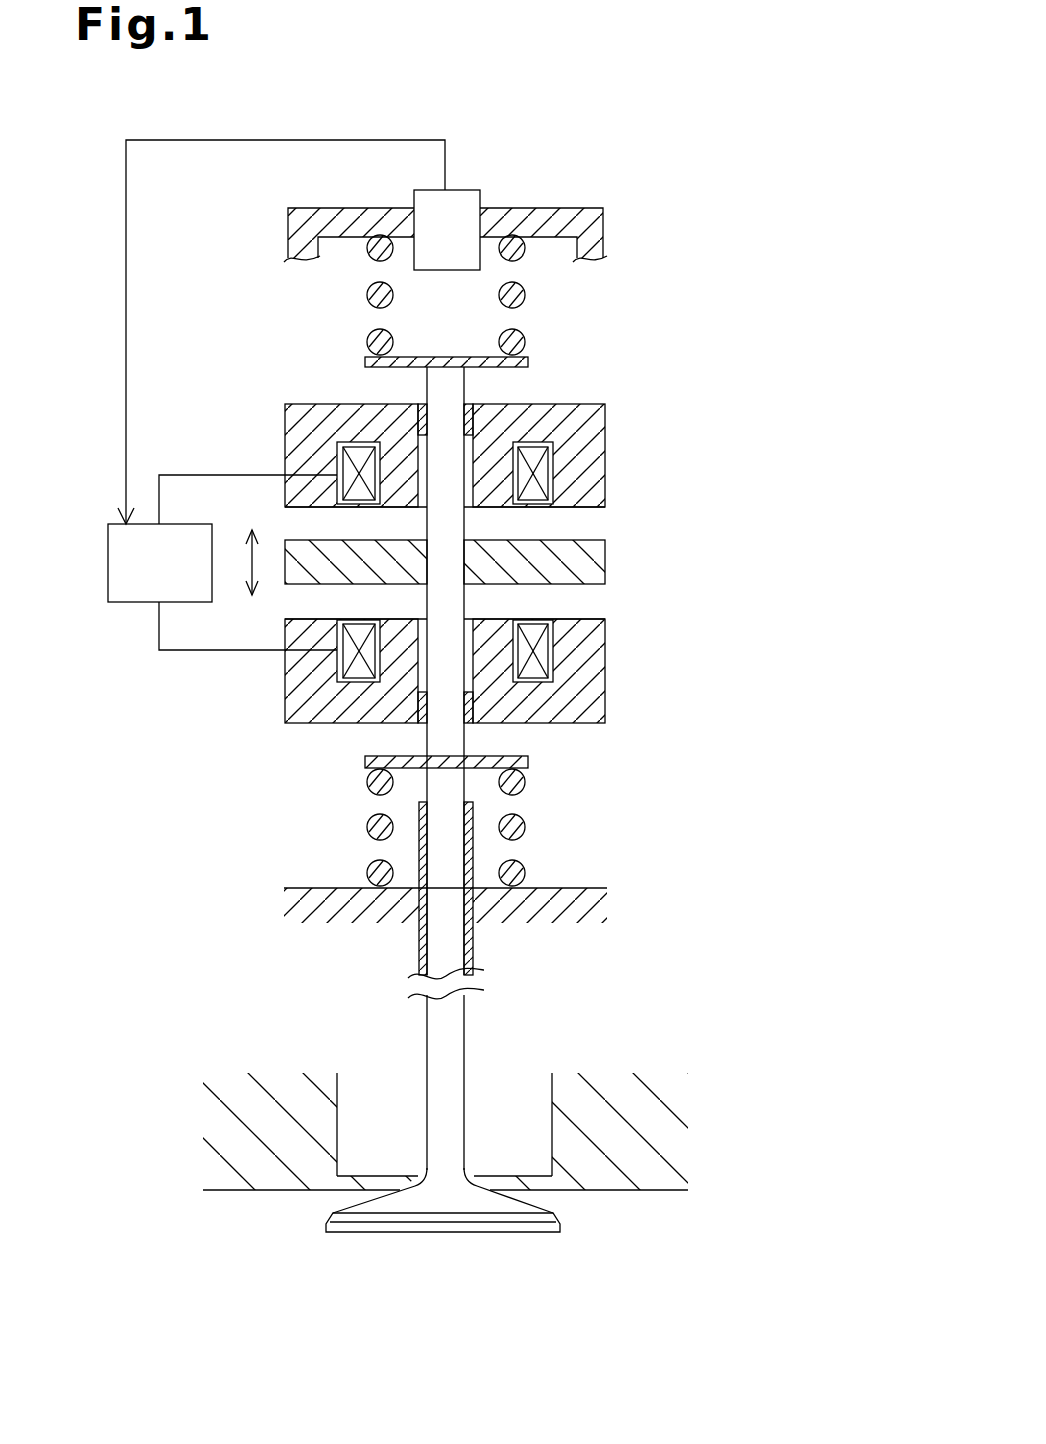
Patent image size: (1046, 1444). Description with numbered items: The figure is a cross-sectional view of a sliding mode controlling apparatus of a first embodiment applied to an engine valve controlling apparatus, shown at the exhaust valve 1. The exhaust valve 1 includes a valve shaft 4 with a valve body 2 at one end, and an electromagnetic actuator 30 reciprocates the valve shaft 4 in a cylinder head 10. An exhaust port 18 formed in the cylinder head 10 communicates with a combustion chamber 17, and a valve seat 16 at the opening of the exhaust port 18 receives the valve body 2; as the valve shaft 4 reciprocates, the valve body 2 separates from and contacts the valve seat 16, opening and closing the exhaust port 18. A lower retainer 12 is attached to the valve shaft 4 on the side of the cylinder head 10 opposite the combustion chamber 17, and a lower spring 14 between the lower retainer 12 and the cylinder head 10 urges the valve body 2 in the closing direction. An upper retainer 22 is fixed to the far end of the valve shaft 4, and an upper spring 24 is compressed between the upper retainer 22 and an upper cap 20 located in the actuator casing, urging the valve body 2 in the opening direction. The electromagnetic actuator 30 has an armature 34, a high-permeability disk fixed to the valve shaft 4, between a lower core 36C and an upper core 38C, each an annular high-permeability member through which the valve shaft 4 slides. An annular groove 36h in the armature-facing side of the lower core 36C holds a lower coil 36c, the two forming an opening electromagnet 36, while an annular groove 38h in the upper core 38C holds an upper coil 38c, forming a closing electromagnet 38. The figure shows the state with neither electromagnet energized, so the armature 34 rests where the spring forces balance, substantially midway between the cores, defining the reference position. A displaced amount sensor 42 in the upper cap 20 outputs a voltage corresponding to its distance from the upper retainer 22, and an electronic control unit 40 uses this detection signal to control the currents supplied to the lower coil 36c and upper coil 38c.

The exhaust valve 1 is at (417, 844).
The valve body 2 is at (425, 1233).
The valve shaft 4 is at (453, 1023).
The cylinder head 10 is at (590, 930).
The lower retainer 12 is at (528, 762).
The lower spring 14 is at (525, 827).
The valve seat 16 is at (548, 1183).
The combustion chamber 17 is at (522, 1318).
The exhaust port 18 is at (518, 1122).
The upper cap 20 is at (600, 215).
The upper retainer 22 is at (528, 358).
The upper spring 24 is at (525, 292).
The electromagnetic actuator 30 is at (442, 556).
The armature 34 is at (605, 560).
The opening electromagnet 36 is at (496, 691).
The lower core 36C is at (596, 690).
The lower coil 36c is at (545, 648).
The annular groove 36h is at (552, 618).
The closing electromagnet 38 is at (499, 429).
The upper core 38C is at (605, 438).
The upper coil 38c is at (545, 466).
The annular groove 38h is at (548, 506).
The electronic control unit 40 is at (120, 602).
The displaced amount sensor 42 is at (470, 184).